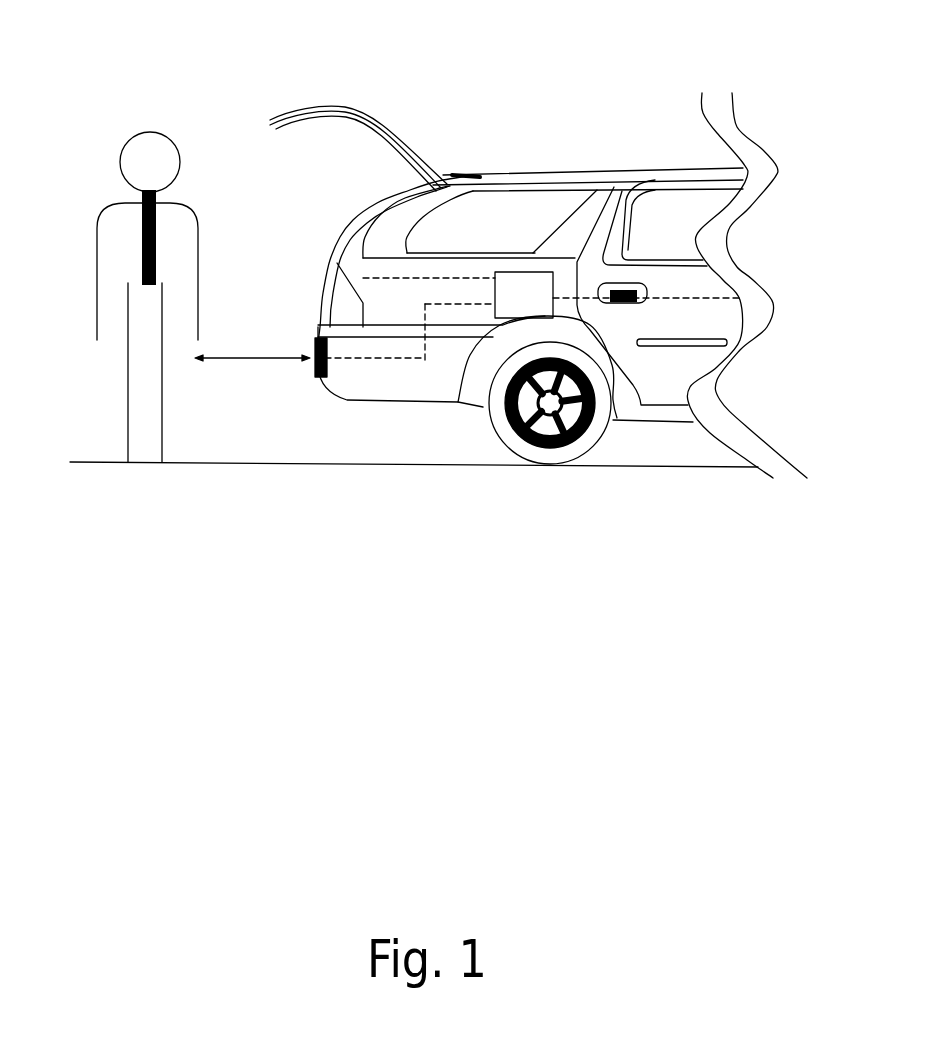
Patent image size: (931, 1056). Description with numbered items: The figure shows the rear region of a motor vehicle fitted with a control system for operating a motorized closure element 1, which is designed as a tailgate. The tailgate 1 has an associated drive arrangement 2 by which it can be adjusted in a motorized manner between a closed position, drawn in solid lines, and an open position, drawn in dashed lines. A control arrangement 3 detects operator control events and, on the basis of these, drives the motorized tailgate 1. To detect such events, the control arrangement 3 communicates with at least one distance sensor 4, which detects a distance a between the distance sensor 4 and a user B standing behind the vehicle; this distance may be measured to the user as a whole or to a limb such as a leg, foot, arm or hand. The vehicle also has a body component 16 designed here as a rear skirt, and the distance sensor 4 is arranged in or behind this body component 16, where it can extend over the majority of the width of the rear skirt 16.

The closure element 1 is at (355, 110).
The drive arrangement 2 is at (478, 176).
The control arrangement 3 is at (530, 280).
The distance sensor 4 is at (317, 363).
The body component 16 is at (412, 385).
The user B is at (146, 156).
The distance a is at (252, 342).